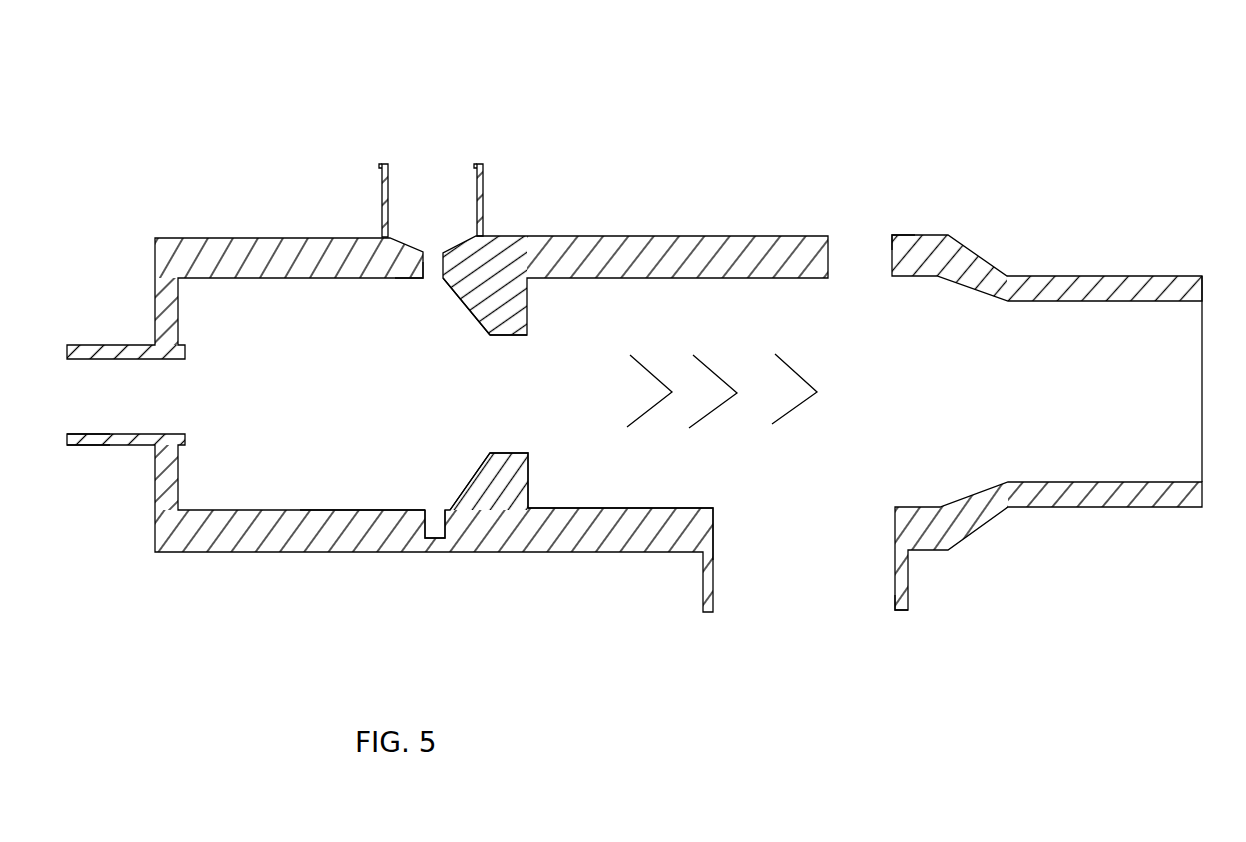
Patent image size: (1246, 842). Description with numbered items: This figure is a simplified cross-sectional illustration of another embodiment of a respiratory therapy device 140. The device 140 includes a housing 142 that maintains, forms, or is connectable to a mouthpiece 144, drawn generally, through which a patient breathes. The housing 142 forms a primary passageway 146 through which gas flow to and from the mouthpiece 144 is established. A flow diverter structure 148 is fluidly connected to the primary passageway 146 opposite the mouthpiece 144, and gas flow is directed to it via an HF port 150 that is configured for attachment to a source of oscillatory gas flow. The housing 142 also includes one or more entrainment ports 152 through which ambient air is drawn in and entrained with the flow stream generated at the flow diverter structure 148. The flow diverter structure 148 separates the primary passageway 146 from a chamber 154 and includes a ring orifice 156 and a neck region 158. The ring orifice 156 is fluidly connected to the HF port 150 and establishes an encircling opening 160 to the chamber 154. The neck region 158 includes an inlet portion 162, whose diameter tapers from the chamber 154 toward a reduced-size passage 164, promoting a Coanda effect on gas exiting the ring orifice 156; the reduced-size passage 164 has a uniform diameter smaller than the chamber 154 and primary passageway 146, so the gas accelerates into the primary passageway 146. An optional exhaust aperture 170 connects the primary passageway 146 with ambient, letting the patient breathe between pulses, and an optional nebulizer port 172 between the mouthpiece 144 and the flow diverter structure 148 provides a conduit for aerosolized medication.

The respiratory therapy device 140 is at (662, 47).
The housing 142 is at (695, 234).
The mouthpiece 144 is at (1152, 270).
The primary passageway 146 is at (635, 468).
The flow diverter structure 148 is at (398, 451).
The HF port 150 is at (485, 168).
The entrainment port 152 is at (80, 447).
The chamber 154 is at (250, 465).
The ring orifice 156 is at (437, 541).
The neck region 158 is at (468, 462).
The encircling opening 160 is at (412, 282).
The inlet portion 162 is at (470, 306).
The reduced-size passage 164 is at (518, 332).
The exhaust aperture 170 is at (888, 238).
The nebulizer port 172 is at (897, 612).